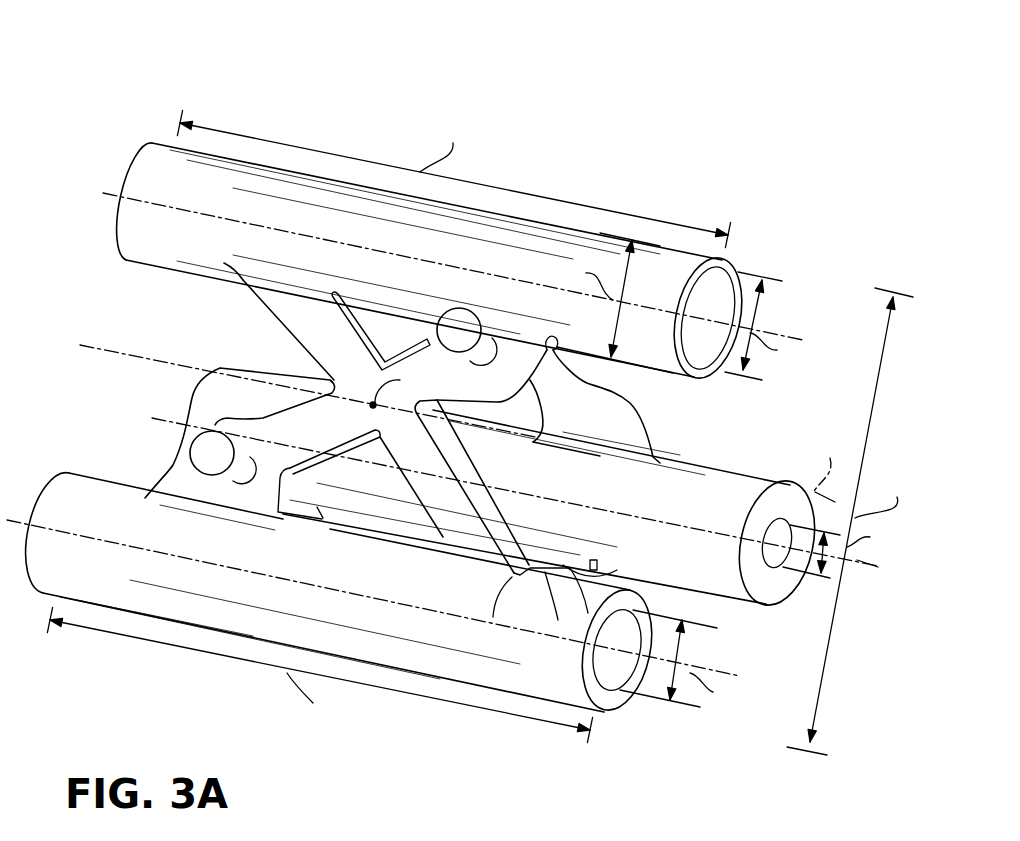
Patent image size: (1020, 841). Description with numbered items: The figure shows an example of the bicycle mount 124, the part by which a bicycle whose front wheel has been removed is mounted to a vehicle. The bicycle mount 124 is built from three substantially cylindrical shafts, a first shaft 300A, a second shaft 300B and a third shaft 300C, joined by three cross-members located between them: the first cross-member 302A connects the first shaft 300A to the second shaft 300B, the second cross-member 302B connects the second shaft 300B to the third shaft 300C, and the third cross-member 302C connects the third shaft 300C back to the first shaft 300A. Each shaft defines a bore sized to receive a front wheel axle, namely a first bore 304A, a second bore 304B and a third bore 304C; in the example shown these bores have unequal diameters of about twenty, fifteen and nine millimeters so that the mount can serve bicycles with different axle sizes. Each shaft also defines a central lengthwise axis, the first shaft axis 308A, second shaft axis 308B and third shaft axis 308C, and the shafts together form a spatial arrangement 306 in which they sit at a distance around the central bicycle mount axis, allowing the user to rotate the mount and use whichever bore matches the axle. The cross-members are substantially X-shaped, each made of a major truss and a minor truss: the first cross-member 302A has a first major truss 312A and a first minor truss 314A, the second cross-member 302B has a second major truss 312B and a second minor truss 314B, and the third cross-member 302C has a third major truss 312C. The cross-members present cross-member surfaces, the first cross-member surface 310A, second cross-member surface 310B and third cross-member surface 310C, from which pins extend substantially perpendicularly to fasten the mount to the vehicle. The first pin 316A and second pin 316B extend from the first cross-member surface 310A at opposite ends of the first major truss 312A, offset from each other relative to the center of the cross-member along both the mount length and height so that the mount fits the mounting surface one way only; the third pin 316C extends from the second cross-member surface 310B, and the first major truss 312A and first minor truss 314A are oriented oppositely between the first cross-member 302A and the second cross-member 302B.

The bicycle mount 124 is at (258, 78).
The first shaft 300A is at (280, 167).
The second shaft 300B is at (70, 597).
The third shaft 300C is at (747, 473).
The first cross-member 302A is at (300, 333).
The second cross-member 302B is at (603, 573).
The third cross-member 302C is at (650, 413).
The first bore 304A is at (743, 277).
The second bore 304B is at (627, 673).
The third bore 304C is at (767, 530).
The spatial arrangement 306 is at (803, 375).
The first shaft axis 308A is at (795, 332).
The second shaft axis 308B is at (720, 668).
The third shaft axis 308C is at (850, 560).
The first cross-member surface 310A is at (333, 347).
The second cross-member surface 310B is at (533, 580).
The third cross-member surface 310C is at (652, 438).
The first major truss 312A is at (183, 473).
The second major truss 312B is at (323, 530).
The third major truss 312C is at (593, 383).
The first minor truss 314A is at (290, 303).
The second minor truss 314B is at (557, 580).
The first pin 316A is at (458, 302).
The second pin 316B is at (185, 440).
The third pin 316C is at (393, 350).